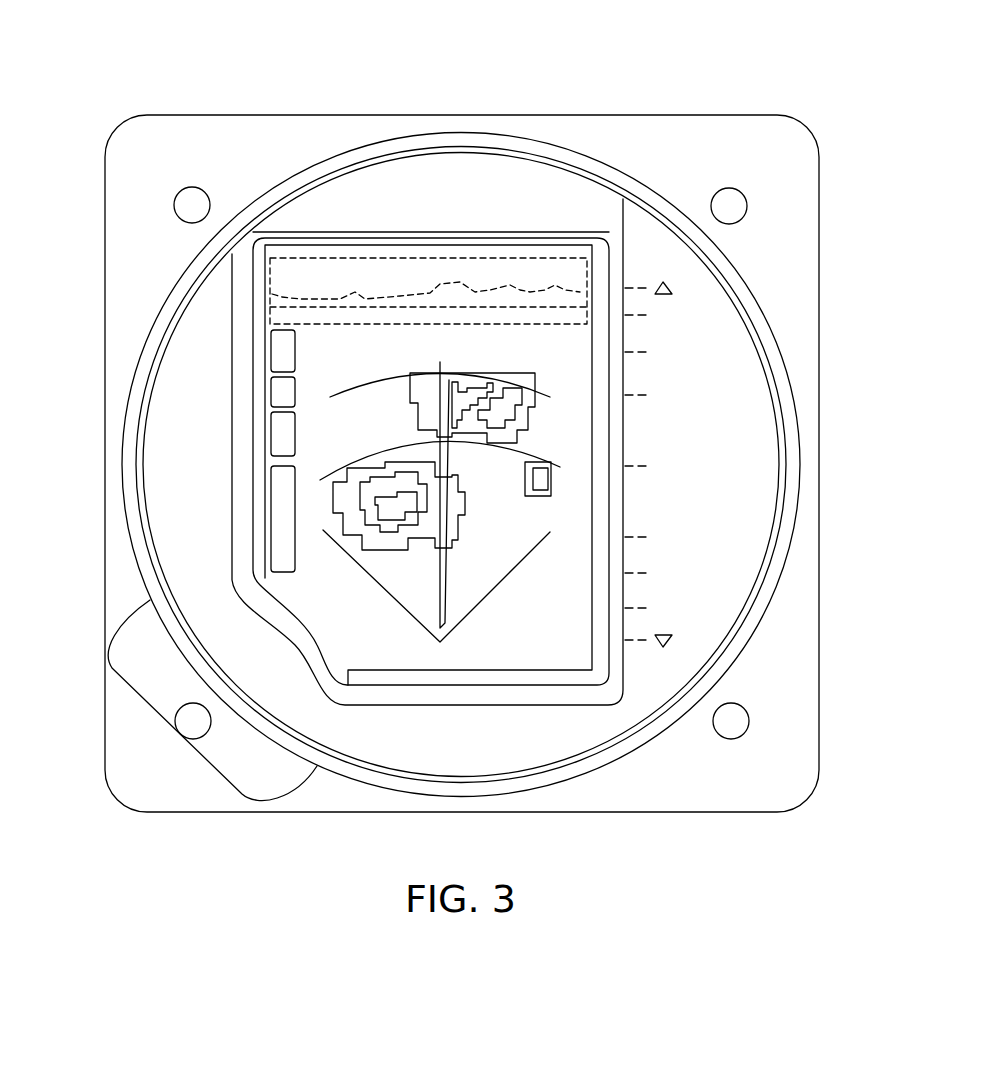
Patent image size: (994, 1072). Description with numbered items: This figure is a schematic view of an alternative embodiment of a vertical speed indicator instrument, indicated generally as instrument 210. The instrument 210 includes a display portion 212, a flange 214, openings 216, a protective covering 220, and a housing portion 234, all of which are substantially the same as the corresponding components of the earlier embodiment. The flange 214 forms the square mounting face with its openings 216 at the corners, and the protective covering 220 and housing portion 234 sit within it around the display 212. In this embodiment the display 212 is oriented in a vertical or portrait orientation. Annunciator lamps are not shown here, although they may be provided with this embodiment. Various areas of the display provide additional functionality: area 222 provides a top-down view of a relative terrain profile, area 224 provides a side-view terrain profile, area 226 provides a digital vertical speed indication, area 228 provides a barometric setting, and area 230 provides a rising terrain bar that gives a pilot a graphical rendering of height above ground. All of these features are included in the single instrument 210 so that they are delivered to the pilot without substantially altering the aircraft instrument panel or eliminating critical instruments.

The instrument 210 is at (713, 93).
The display portion 212 is at (554, 513).
The flange 214 is at (805, 660).
The openings 216 is at (728, 740).
The protective covering 220 is at (487, 177).
The area providing top-down view of relative terrain profile 222 is at (555, 667).
The area providing side-view terrain profile 224 is at (292, 309).
The area providing digital vertical speed indication 226 is at (668, 382).
The area providing barometric setting 228 is at (367, 667).
The area providing rising terrain bar 230 is at (270, 540).
The housing portion 234 is at (725, 266).